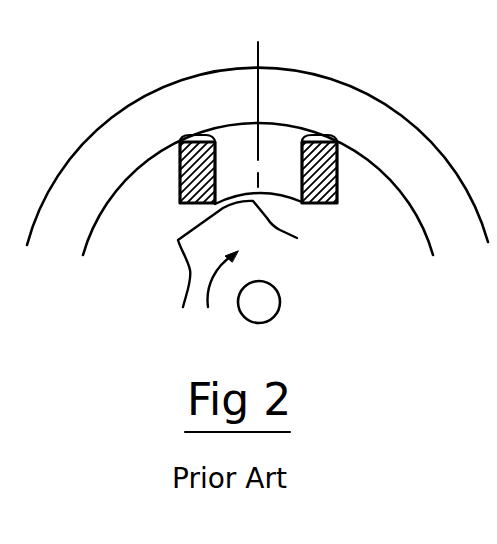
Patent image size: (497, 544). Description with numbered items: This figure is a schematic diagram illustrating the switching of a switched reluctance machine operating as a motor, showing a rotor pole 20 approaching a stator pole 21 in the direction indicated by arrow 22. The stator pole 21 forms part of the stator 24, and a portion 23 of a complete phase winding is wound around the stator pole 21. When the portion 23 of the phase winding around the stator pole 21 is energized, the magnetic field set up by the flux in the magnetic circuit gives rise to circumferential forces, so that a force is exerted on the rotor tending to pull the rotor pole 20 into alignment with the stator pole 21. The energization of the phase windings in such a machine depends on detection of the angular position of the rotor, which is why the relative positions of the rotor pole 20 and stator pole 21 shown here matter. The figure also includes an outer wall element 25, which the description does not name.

The rotor pole 20 is at (212, 226).
The stator pole 21 is at (278, 153).
The arrow 22 is at (240, 275).
The portion of the phase winding 23 is at (338, 185).
The stator 24 is at (285, 277).
The housing wall 25 is at (383, 132).